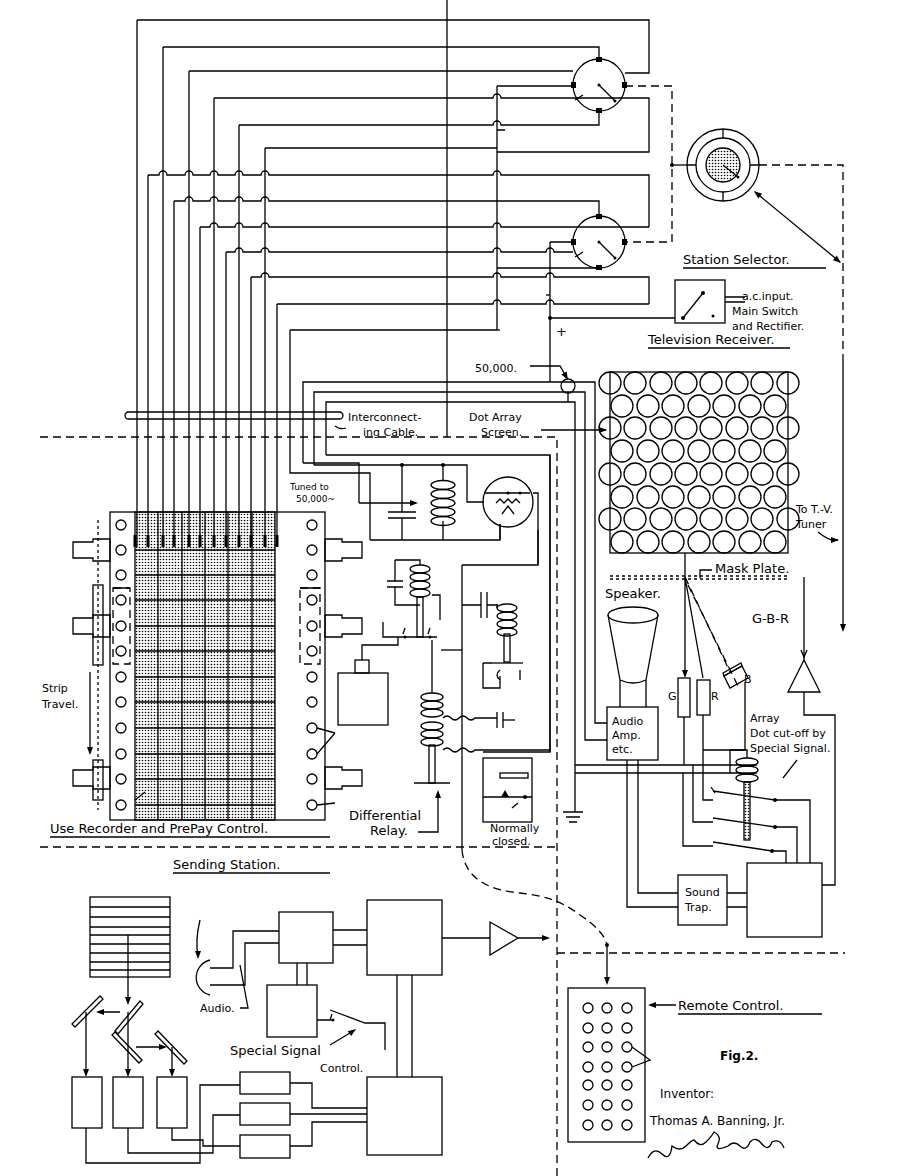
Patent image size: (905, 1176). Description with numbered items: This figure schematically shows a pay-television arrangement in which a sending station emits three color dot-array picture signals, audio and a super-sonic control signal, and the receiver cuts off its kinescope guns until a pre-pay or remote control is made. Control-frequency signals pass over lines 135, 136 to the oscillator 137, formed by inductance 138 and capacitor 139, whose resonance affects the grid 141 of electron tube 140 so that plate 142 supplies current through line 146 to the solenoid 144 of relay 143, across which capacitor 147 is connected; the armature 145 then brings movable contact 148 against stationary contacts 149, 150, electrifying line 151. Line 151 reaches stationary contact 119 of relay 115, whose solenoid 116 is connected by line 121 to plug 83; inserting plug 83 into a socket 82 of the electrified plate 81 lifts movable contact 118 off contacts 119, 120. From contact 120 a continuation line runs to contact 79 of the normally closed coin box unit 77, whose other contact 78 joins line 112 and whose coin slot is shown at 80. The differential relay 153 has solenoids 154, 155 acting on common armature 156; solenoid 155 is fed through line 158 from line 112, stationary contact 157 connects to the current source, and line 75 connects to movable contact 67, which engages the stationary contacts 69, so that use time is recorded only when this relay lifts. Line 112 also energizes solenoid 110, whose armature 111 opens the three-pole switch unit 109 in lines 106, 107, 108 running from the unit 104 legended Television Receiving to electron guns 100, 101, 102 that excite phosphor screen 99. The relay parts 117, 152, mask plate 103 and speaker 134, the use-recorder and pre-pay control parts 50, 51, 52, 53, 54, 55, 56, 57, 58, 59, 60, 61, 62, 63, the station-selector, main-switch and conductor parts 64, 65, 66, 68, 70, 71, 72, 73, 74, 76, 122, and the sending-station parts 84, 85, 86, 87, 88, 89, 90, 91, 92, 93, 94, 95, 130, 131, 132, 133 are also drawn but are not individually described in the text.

The push button 50 is at (335, 540).
The push button 51 is at (338, 775).
The contact holes 52 is at (336, 740).
The sensing zone 53 is at (113, 590).
The push button 54 is at (345, 615).
The synchronous motor 55 is at (344, 673).
The motor terminal 56 is at (362, 658).
The plunger 57 is at (92, 541).
The strip end 58 is at (135, 800).
The guide bar 59 is at (93, 754).
The guide bar 60 is at (93, 608).
The plunger 61 is at (92, 793).
The use recorder strip 62 is at (135, 502).
The contact hole 63 is at (336, 802).
The station selector dial 64 is at (736, 128).
The selector lead 65 is at (690, 163).
The selector switch 66 is at (603, 265).
The movable contact 67 is at (603, 108).
The switch contact 68 is at (575, 257).
The stationary contacts 69 is at (575, 100).
The conductor 70 is at (413, 201).
The conductor 71 is at (413, 47).
The conductor 72 is at (548, 298).
The main switch 73 is at (700, 301).
The a.c. input leads 74 is at (738, 297).
The line 75 is at (505, 138).
The tuner lead 76 is at (840, 357).
The coin box unit 77 is at (535, 816).
The contact 78 is at (507, 787).
The contact 79 is at (505, 810).
The coin receiving slot 80 is at (507, 790).
The plate 81 is at (647, 1042).
The sockets 82 is at (652, 1057).
The plug 83 is at (612, 965).
The special signal lead 84 is at (512, 886).
The red pickup 85 is at (82, 1128).
The green pickup 86 is at (125, 1128).
The blue pickup 87 is at (168, 1128).
The scanned subject 88 is at (112, 910).
The beam splitter 89 is at (142, 1007).
The beam splitter 90 is at (122, 1052).
The mirror 91 is at (82, 1012).
The mirror 92 is at (175, 1036).
The dot sampler 93 is at (444, 1088).
The color signals transmitter 94 is at (440, 911).
The transmitting amplifier 95 is at (500, 955).
The phosphor screen 99 is at (792, 432).
The electron gun 100 is at (679, 683).
The electron gun 101 is at (710, 705).
The electron gun 102 is at (740, 658).
The mask plate 103 is at (710, 580).
The television receiving unit 104 is at (784, 900).
The line 106 is at (710, 839).
The line 107 is at (710, 816).
The line 108 is at (710, 792).
The three pole switch unit 109 is at (779, 787).
The solenoid 110 is at (758, 772).
The armature 111 is at (752, 793).
The line 112 is at (553, 590).
The relay 115 is at (514, 598).
The solenoid 116 is at (522, 620).
The relay armature 117 is at (512, 650).
The movable contact 118 is at (499, 682).
The stationary contact 119 is at (487, 667).
The stationary contact 120 is at (533, 679).
The line 121 is at (443, 811).
The conductor 122 is at (500, 326).
The oscillator 130 is at (318, 986).
The audio unit 131 is at (308, 912).
The microphone 132 is at (232, 950).
The special signal switch 133 is at (345, 1008).
The speaker 134 is at (622, 705).
The line 135 is at (574, 380).
The line 136 is at (580, 382).
The oscillator 137 is at (408, 480).
The inductance 138 is at (456, 490).
The capacitor 139 is at (418, 520).
The electron tube 140 is at (526, 483).
The grid 141 is at (497, 508).
The plate 142 is at (508, 490).
The relay 143 is at (427, 578).
The solenoid 144 is at (440, 590).
The armature 145 is at (438, 613).
The line 146 is at (532, 563).
The capacitor 147 is at (388, 580).
The movable contact 148 is at (421, 666).
The stationary contact 149 is at (398, 636).
The stationary contact 150 is at (422, 641).
The line 151 is at (482, 660).
The relay lead 152 is at (445, 660).
The differential relay 153 is at (420, 755).
The solenoid 154 is at (420, 713).
The solenoid 155 is at (420, 745).
The common armature 156 is at (484, 742).
The stationary contact 157 is at (418, 780).
The line 158 is at (503, 736).